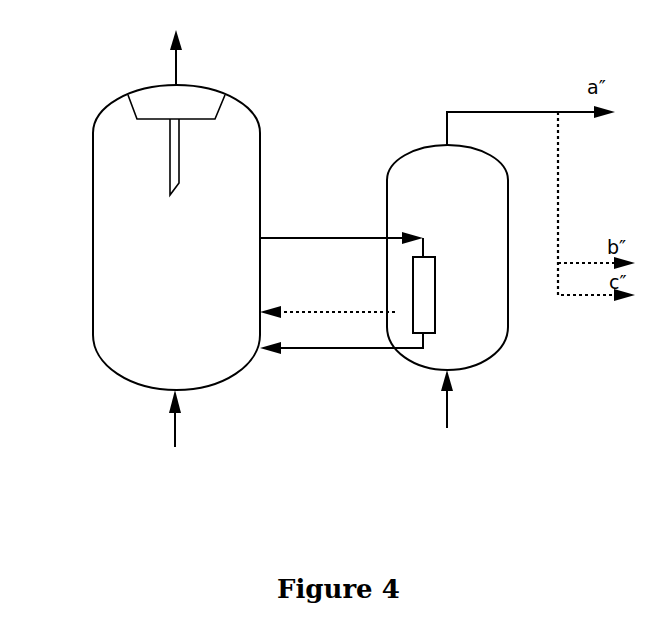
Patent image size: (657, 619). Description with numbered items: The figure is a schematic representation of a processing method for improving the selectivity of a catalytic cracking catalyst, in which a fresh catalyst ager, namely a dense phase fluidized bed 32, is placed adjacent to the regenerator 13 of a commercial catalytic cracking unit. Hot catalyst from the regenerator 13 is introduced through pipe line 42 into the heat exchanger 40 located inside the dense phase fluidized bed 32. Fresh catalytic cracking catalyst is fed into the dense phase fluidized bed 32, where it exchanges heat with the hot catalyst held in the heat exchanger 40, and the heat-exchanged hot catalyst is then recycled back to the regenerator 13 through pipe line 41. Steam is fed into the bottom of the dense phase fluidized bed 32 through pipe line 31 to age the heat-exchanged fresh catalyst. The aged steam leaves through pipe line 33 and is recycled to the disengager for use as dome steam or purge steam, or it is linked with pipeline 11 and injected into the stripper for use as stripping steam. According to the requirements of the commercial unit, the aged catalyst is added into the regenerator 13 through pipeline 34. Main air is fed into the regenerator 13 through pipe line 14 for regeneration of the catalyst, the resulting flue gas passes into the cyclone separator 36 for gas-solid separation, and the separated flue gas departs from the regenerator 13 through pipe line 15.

The regenerator 13 is at (176, 237).
The cyclone separator 36 is at (170, 142).
The pipe line 15 is at (191, 57).
The pipe line 14 is at (190, 418).
The pipe line 42 is at (341, 250).
The pipeline 34 is at (327, 299).
The pipe line 41 is at (341, 339).
The heat exchanger 40 is at (422, 308).
The dense phase fluidized bed 32 is at (447, 257).
The pipe line 33 is at (531, 115).
The pipe line 31 is at (466, 399).
The pipeline 11 is at (596, 206).